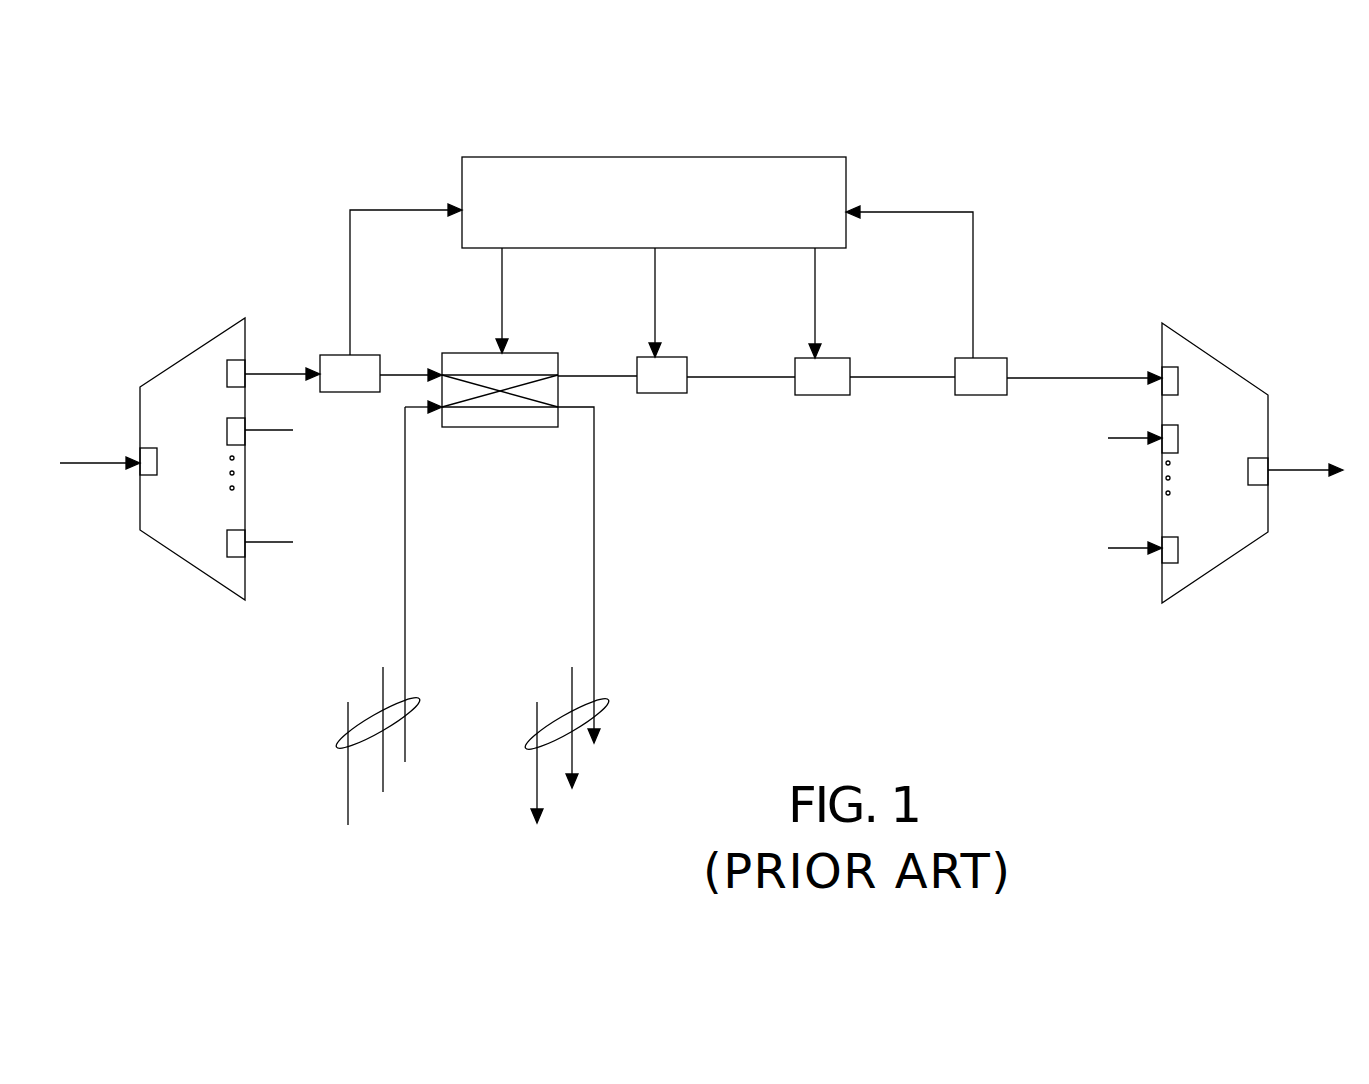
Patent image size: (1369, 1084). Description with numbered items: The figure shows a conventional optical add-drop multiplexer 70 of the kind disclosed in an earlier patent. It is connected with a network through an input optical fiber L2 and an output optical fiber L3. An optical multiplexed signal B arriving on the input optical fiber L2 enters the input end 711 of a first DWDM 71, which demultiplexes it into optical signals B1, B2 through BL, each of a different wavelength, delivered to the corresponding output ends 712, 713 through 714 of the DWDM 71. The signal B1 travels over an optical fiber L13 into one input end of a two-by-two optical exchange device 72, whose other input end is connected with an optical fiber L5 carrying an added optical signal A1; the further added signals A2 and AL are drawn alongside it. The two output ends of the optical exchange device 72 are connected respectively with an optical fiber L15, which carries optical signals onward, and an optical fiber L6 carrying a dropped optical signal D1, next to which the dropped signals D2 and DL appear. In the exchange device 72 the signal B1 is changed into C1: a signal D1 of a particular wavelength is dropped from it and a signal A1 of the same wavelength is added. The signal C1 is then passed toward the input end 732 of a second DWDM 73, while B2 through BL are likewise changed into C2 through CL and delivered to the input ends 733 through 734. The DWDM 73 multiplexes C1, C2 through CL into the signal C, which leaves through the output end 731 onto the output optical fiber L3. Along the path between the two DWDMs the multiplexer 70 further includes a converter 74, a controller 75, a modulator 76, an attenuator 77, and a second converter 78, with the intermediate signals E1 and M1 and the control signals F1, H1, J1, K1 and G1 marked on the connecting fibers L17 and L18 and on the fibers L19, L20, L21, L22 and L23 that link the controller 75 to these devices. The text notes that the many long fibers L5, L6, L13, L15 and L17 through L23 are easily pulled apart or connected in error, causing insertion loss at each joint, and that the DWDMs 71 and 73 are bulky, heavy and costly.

The optical add-drop multiplexer 70 is at (224, 215).
The DWDM 71 is at (217, 480).
The input end 711 is at (150, 476).
The output end 712 is at (227, 372).
The output end 713 is at (227, 428).
The output end 714 is at (227, 551).
The 2×2 optical exchange device 72 is at (482, 427).
The DWDM 73 is at (1230, 483).
The output end 731 is at (1258, 486).
The input end 732 is at (1178, 380).
The input end 733 is at (1178, 438).
The input end 734 is at (1178, 548).
The converter 74 is at (332, 386).
The controller 75 is at (588, 209).
The modulator 76 is at (645, 388).
The attenuator 77 is at (804, 390).
The converter 78 is at (964, 390).
The input optical fiber L2 is at (92, 465).
The output optical fiber L3 is at (1300, 470).
The optical fiber L5 is at (337, 746).
The optical fiber L6 is at (608, 703).
The optical fiber L13 is at (287, 374).
The optical fiber L15 is at (617, 376).
The optical fiber L17 is at (890, 378).
The optical fiber L18 is at (1050, 378).
The optical fiber L19 is at (350, 275).
The optical fiber L20 is at (502, 290).
The optical fiber L21 is at (655, 290).
The optical fiber L22 is at (815, 290).
The optical fiber L23 is at (973, 290).
The optical multiplexed signal B is at (105, 443).
The optical signal B1 is at (273, 353).
The optical signal B2 is at (273, 413).
The optical signal BL is at (273, 527).
The signal F1 is at (380, 247).
The signal H1 is at (532, 275).
The signal J1 is at (685, 275).
The signal K1 is at (847, 277).
The signal G1 is at (1005, 277).
The signal E1 is at (593, 358).
The signal M1 is at (735, 358).
The optical signal C1 is at (1008, 358).
The optical signal C2 is at (1120, 415).
The optical signal CL is at (1117, 525).
The multiplexed optical signal C is at (1297, 448).
The added optical signal A1 is at (432, 640).
The signal A2 is at (372, 640).
The signal AL is at (338, 680).
The dropped optical signal D1 is at (622, 640).
The signal D2 is at (563, 640).
The signal DL is at (527, 680).